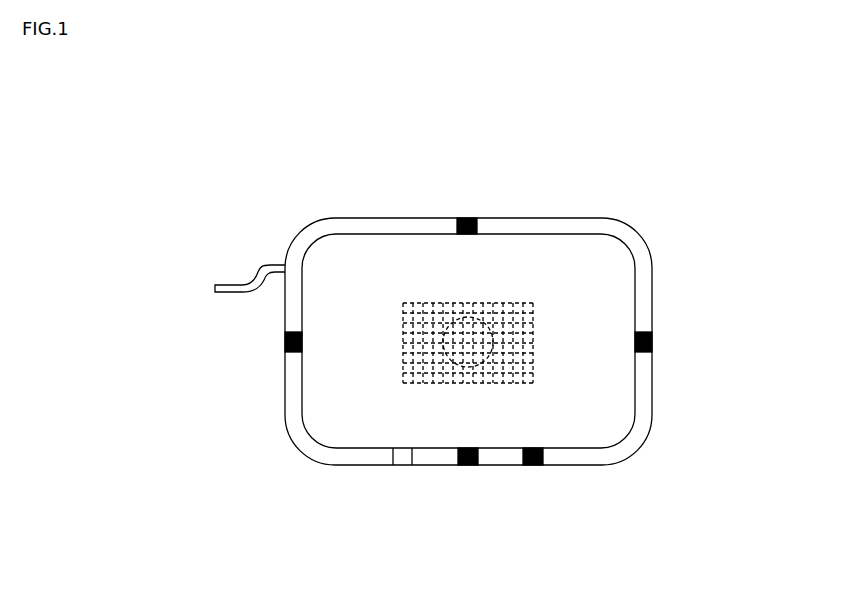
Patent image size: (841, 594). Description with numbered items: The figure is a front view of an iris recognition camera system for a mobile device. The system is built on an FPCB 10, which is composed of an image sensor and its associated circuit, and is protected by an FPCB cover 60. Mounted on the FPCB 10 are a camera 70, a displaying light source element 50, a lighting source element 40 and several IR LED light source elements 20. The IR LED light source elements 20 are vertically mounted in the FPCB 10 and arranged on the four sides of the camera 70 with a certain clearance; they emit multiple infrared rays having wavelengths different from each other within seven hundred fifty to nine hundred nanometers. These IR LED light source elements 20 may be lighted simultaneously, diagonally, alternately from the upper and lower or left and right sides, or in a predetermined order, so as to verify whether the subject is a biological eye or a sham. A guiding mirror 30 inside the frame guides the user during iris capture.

The FPCB 10 is at (365, 218).
The IR LED light source elements 20 is at (466, 218).
The guiding mirror 30 is at (335, 404).
The lighting source element 40 is at (402, 466).
The displaying light source element 50 is at (535, 466).
The FPCB cover 60 is at (640, 408).
The camera 70 is at (533, 330).